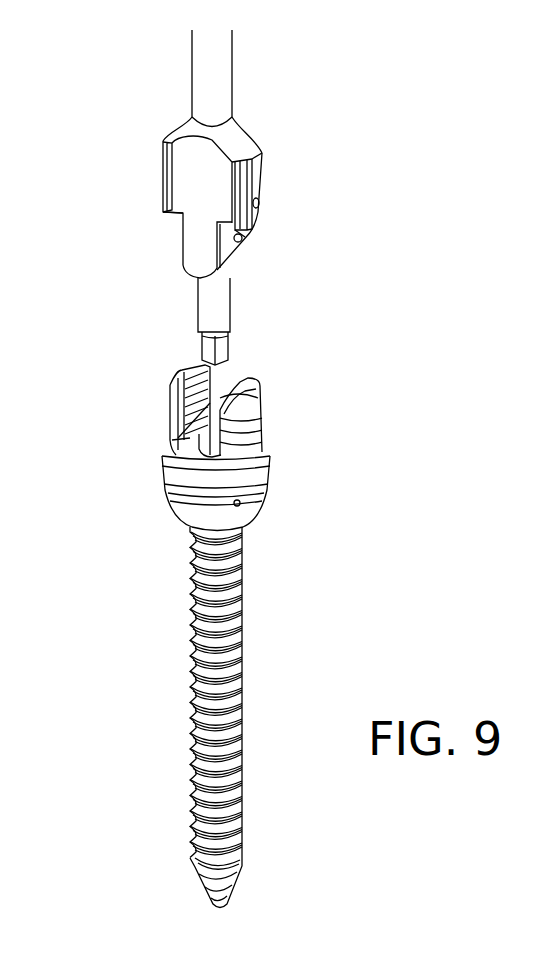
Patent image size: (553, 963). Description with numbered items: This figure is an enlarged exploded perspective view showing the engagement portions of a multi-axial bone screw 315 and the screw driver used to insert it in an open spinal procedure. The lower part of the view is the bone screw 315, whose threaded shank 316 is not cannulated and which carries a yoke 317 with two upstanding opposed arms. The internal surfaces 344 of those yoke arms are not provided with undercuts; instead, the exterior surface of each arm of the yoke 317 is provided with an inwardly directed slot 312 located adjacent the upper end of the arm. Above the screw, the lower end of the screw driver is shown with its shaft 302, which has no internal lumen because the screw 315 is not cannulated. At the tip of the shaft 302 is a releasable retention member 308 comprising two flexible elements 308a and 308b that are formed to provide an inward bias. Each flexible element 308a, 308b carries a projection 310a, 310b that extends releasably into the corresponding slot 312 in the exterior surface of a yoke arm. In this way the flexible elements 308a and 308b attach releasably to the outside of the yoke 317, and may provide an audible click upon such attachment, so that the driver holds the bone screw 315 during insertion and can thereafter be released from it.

The shaft 302 is at (232, 303).
The releasable retention member 308 is at (254, 176).
The flexible element 308a is at (263, 205).
The flexible element 308b is at (164, 178).
The projection 310a is at (248, 240).
The projection 310b is at (170, 212).
The slot 312 is at (262, 396).
The yoke 317 is at (254, 437).
The internal surfaces 344 is at (183, 432).
The multi-axial bone screw 315 is at (252, 653).
The threaded shank 316 is at (243, 557).